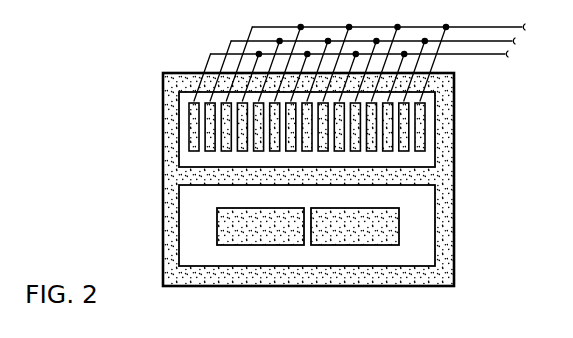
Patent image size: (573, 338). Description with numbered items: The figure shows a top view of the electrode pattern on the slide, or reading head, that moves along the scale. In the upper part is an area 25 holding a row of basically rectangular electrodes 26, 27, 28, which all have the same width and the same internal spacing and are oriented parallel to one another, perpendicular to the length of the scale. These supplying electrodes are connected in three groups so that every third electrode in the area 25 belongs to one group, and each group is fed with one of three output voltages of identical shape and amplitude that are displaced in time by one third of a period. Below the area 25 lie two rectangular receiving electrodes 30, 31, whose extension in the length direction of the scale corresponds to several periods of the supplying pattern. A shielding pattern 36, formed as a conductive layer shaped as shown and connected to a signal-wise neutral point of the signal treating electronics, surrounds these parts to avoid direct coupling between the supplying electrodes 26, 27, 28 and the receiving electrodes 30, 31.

The area 25 is at (210, 163).
The rectangular electrode 26 is at (196, 104).
The rectangular electrode 27 is at (210, 104).
The rectangular electrode 28 is at (229, 104).
The rectangular electrode 30 is at (262, 244).
The rectangular electrode 31 is at (358, 244).
The shielding pattern 36 is at (455, 168).